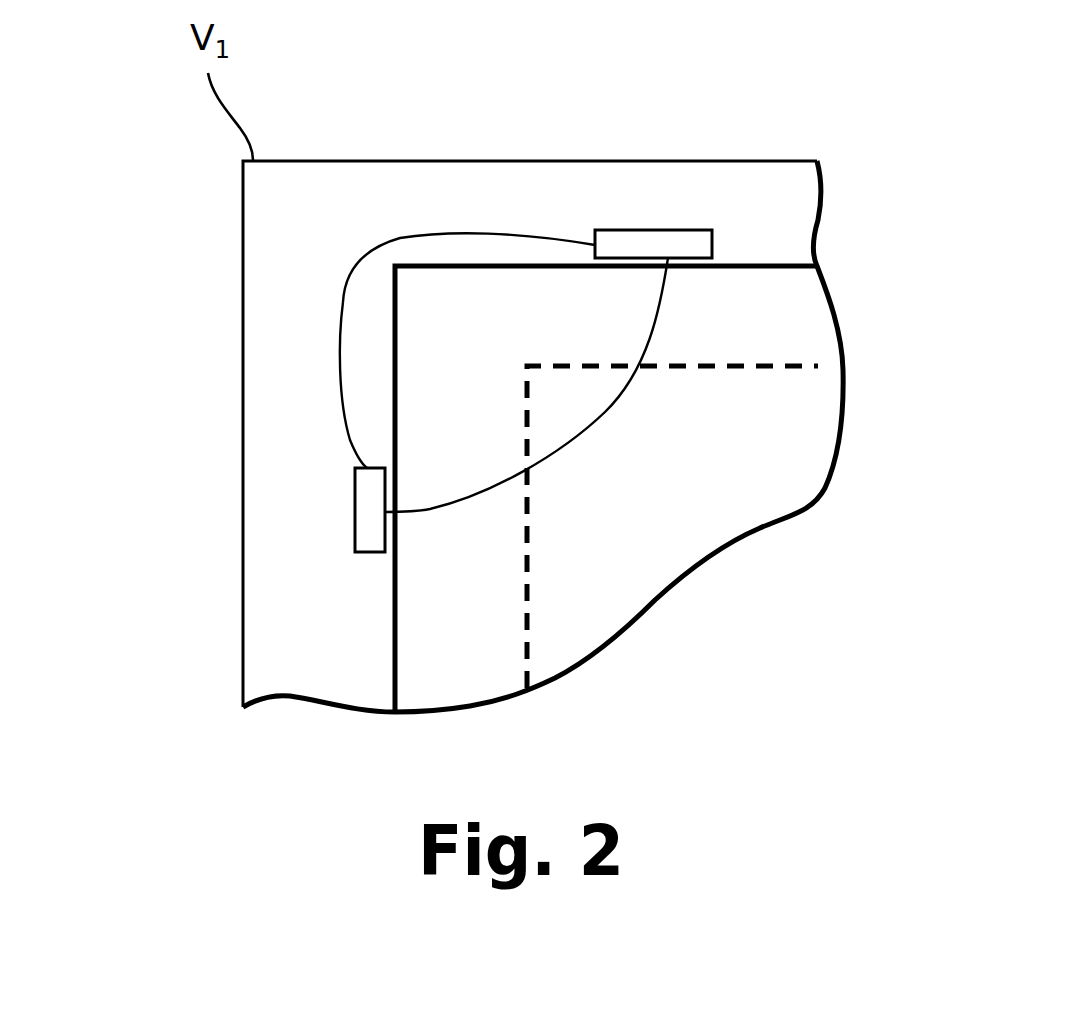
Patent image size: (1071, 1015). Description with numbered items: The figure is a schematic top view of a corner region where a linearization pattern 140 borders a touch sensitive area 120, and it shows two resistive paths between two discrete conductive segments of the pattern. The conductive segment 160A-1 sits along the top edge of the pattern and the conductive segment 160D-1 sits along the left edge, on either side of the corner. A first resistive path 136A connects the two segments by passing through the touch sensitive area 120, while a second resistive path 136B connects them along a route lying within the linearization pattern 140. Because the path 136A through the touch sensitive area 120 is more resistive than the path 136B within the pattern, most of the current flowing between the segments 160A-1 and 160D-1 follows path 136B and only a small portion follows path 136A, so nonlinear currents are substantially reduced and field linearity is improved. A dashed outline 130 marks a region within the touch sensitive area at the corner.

The touch sensitive area 120 is at (680, 588).
The contact region (dashed) 130 is at (798, 366).
The linearization pattern 140 is at (288, 630).
The resistive path 136A is at (578, 423).
The resistive path 136B is at (343, 302).
The conductive segment 160A-1 is at (678, 230).
The conductive segment 160D-1 is at (357, 505).